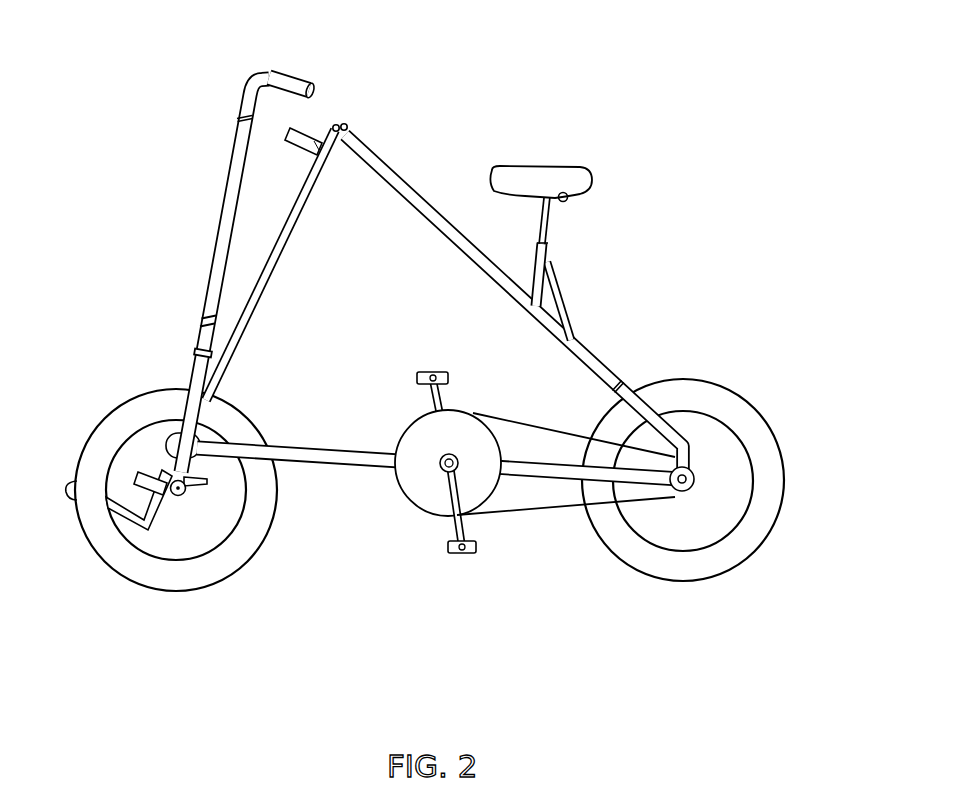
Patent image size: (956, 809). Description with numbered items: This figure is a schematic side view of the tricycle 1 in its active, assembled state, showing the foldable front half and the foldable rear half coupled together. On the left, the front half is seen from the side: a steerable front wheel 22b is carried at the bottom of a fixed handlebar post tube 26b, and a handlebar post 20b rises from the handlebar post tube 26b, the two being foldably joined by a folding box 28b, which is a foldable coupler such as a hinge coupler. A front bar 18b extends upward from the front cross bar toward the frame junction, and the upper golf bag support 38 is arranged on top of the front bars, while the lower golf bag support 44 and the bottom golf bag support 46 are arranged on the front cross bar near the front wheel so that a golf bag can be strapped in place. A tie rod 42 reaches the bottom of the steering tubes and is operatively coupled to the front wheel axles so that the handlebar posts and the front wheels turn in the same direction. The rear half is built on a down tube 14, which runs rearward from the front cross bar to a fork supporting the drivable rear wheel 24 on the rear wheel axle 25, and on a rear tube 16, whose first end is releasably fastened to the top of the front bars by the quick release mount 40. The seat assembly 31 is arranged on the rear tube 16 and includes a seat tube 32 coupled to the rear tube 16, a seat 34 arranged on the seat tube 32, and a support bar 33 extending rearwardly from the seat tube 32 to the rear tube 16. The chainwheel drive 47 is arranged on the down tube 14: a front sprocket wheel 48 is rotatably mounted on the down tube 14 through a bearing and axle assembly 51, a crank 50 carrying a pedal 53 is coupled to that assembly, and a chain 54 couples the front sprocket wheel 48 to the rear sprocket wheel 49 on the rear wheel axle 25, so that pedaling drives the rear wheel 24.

The tricycle 1 is at (425, 397).
The down tube 14 is at (330, 452).
The rear tube 16 is at (432, 207).
The front bar 18b is at (292, 250).
The handlebar post 20b is at (224, 214).
The steerable front wheel 22b is at (245, 536).
The drivable rear wheel 24 is at (738, 545).
The rear wheel axle 25 is at (692, 474).
The handlebar post tube 26b is at (196, 368).
The folding box 28b is at (203, 320).
The seat assembly 31 is at (572, 215).
The seat tube 32 is at (548, 262).
The support bar 33 is at (560, 295).
The seat 34 is at (560, 170).
The upper golf bag support 38 is at (316, 132).
The quick release mount 40 is at (341, 124).
The tie rod 42 is at (184, 495).
The lower golf bag support 44 is at (152, 480).
The bottom golf bag support 46 is at (68, 485).
The chainwheel drive 47 is at (513, 481).
The front sprocket wheel 48 is at (473, 430).
The rear sprocket wheel 49 is at (693, 490).
The crank 50 is at (455, 457).
The bearing and axle assembly 51 is at (408, 480).
The pedal 53 is at (472, 553).
The chain 54 is at (540, 510).